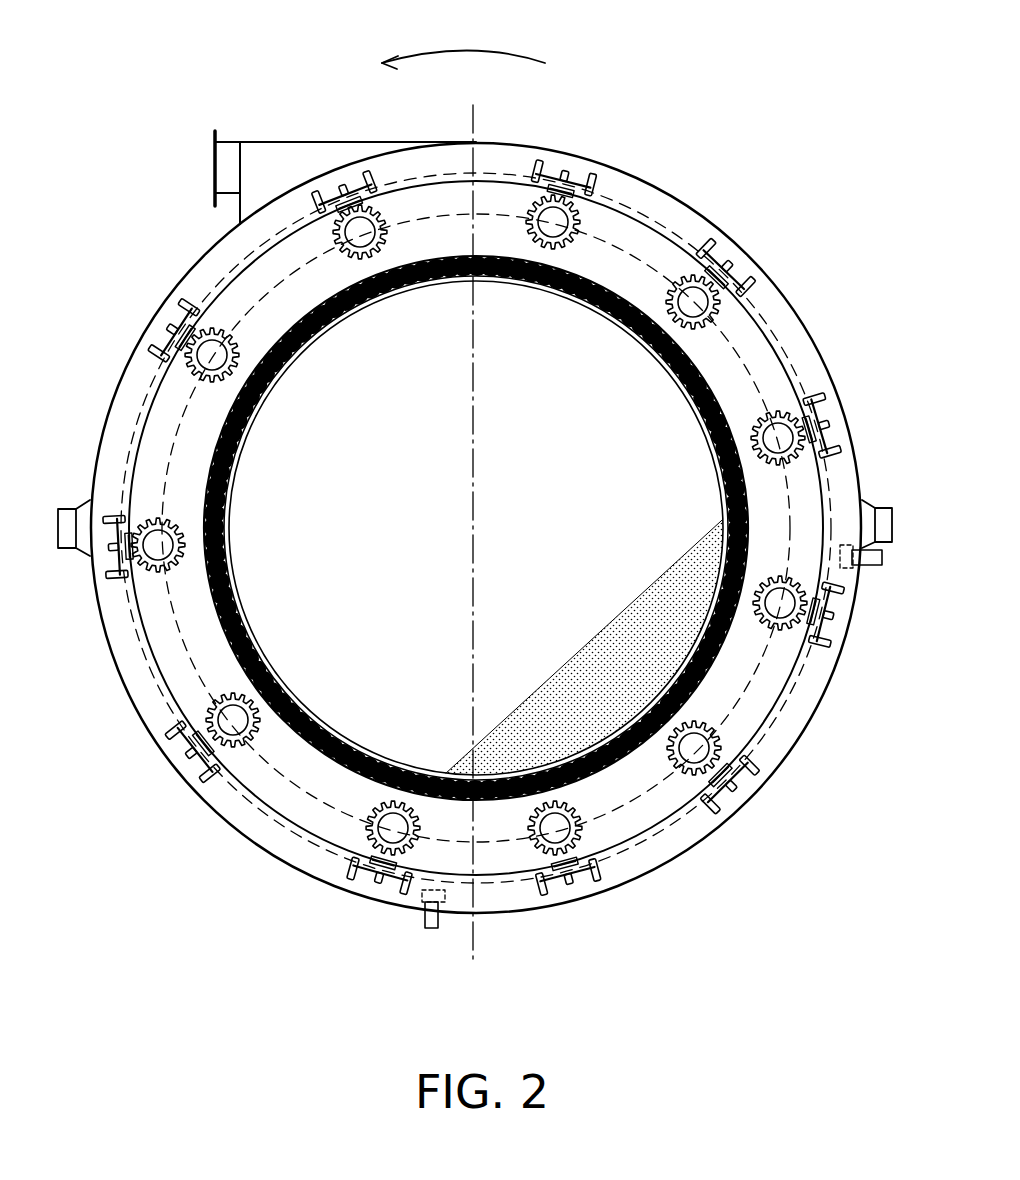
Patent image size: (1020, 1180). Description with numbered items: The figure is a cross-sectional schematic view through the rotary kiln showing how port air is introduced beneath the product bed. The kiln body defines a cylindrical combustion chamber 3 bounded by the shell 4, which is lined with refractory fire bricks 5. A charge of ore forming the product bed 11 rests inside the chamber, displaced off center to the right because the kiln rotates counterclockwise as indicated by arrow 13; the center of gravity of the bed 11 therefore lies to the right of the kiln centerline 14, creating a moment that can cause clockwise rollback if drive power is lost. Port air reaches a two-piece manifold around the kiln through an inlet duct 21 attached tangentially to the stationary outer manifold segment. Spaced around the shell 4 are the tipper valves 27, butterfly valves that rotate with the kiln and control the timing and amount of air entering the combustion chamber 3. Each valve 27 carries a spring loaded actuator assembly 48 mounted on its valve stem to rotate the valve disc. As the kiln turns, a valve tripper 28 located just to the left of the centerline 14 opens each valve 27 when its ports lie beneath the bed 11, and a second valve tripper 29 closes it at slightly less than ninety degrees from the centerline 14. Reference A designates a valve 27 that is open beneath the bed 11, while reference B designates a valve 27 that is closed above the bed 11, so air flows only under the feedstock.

The combustion chamber 3 is at (435, 486).
The shell 4 is at (714, 388).
The fire bricks 5 is at (647, 344).
The product bed 11 is at (612, 640).
The arrow 13 is at (473, 53).
The kiln centerline 14 is at (473, 668).
The inlet duct 21 is at (358, 142).
The tipper valve 27 is at (495, 534).
The valve tripper 28 is at (424, 920).
The second valve tripper 29 is at (868, 565).
The spring loaded actuator assembly 48 is at (766, 298).
The reference A is at (722, 727).
The reference B is at (692, 300).